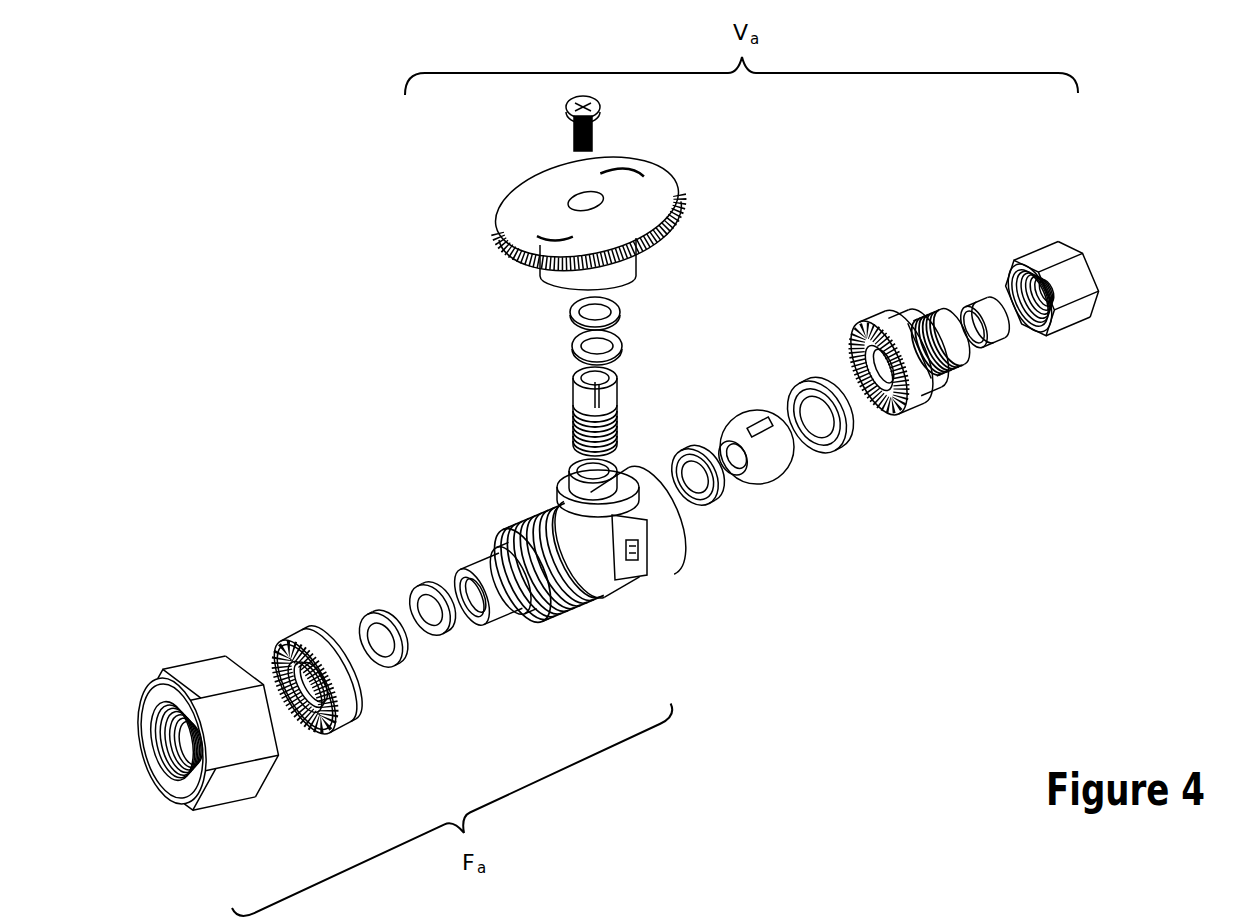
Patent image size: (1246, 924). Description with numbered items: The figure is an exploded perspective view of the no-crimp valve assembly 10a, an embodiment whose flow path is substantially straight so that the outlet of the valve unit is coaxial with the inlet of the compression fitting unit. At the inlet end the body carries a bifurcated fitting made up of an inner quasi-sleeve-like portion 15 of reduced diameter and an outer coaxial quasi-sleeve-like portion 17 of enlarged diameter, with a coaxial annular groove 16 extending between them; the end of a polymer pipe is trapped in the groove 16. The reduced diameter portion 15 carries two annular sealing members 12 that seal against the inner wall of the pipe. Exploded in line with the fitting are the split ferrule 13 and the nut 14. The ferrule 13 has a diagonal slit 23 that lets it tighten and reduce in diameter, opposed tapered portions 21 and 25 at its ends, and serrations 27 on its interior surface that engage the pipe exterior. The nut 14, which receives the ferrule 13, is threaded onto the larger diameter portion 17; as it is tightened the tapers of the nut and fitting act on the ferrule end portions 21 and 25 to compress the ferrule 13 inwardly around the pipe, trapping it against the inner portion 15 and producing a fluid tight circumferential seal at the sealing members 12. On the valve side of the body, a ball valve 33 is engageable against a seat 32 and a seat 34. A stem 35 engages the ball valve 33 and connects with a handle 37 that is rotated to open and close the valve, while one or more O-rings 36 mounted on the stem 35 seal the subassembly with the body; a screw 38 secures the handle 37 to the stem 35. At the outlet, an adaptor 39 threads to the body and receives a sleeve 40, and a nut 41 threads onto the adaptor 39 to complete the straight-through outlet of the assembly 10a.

The valve assembly 10a is at (545, 553).
The annular sealing members 12 is at (405, 663).
The split ferrule 13 is at (353, 697).
The nut 14 is at (260, 782).
The inner quasi-sleeve-like portion 15 is at (488, 578).
The coaxial annular groove 16 is at (490, 537).
The outer coaxial quasi-sleeve-like portion 17 is at (572, 610).
The tapered portion of ferrule 21 is at (282, 652).
The diagonal slit 23 is at (328, 636).
The tapered portion of ferrule 25 is at (365, 685).
The serrations 27 is at (305, 712).
The seat 32 is at (730, 503).
The ball valve 33 is at (787, 467).
The seat 34 is at (853, 443).
The stem 35 is at (572, 413).
The O-rings 36 is at (568, 318).
The handle 37 is at (560, 280).
The screw 38 is at (570, 135).
The adaptor 39 is at (940, 393).
The sleeve 40 is at (1003, 337).
The nut 41 is at (1077, 318).